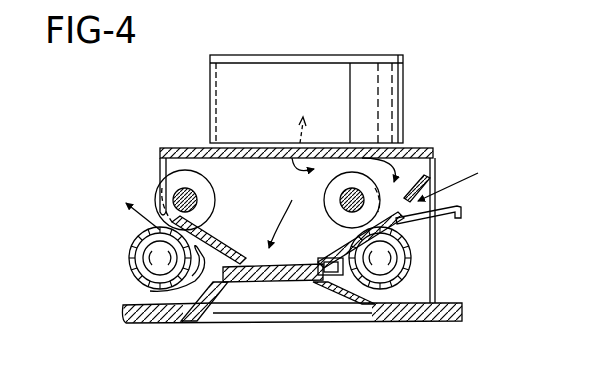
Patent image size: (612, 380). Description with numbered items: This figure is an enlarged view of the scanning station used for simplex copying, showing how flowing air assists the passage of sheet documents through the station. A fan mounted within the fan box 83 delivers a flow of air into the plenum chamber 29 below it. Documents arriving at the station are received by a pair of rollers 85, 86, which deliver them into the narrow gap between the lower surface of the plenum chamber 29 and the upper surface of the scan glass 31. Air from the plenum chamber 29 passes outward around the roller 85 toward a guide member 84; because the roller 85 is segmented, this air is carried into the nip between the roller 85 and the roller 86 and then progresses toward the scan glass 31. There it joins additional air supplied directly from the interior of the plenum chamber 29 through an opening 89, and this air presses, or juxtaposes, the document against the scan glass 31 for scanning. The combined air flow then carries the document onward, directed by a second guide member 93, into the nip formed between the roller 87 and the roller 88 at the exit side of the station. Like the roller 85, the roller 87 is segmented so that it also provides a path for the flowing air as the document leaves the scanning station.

The plenum chamber 29 is at (168, 148).
The scan glass 31 is at (305, 283).
The fan box 83 is at (405, 88).
The guide member 84 is at (458, 207).
The roller 85 is at (324, 190).
The roller 86 is at (411, 268).
The roller 87 is at (160, 194).
The roller 88 is at (131, 252).
The opening 89 is at (278, 252).
The guide member 93 is at (150, 291).